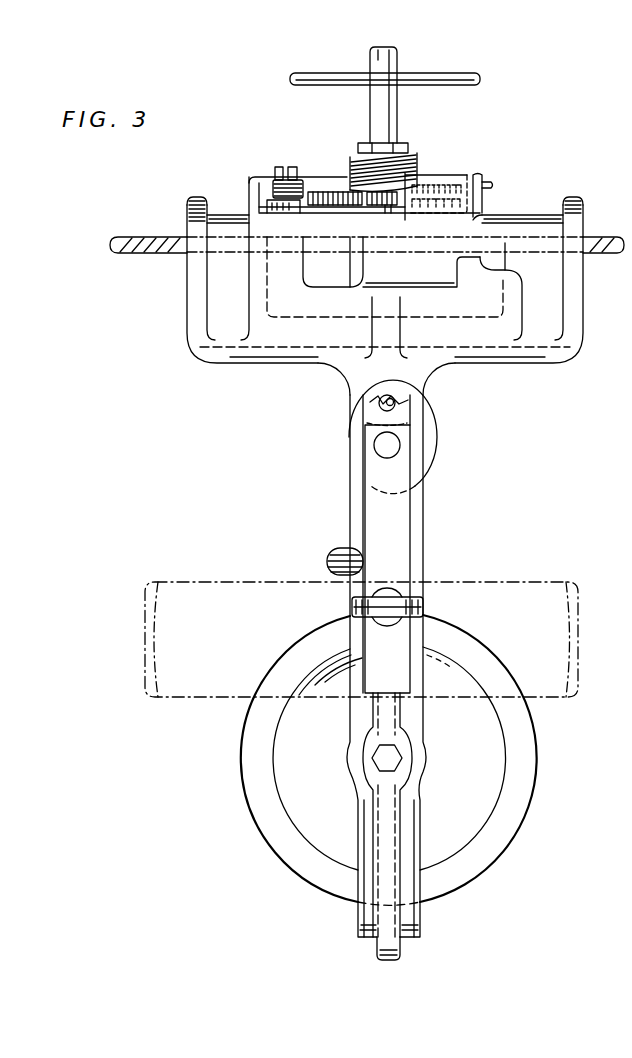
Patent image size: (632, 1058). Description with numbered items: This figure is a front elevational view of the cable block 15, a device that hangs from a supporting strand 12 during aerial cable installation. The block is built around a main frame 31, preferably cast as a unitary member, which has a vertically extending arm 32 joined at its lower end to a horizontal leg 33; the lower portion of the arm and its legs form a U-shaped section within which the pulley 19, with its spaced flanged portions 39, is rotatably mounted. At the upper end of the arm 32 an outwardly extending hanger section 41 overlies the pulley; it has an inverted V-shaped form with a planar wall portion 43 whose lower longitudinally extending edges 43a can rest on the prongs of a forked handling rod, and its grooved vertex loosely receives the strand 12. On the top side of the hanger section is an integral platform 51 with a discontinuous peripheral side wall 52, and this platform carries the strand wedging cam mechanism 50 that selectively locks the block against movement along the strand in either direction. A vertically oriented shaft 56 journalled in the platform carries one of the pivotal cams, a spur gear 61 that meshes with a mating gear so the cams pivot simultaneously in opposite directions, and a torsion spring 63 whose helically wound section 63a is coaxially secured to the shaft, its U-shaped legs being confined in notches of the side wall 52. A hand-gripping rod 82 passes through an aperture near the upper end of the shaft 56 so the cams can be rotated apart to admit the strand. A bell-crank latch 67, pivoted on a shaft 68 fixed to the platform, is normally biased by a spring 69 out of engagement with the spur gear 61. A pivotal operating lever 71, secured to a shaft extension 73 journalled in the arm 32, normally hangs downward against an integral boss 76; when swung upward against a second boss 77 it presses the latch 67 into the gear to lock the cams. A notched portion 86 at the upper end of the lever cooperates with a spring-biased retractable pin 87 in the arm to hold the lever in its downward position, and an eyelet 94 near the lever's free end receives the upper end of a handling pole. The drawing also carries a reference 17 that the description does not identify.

The supporting strand 12 is at (143, 234).
The cable block 15 is at (287, 403).
The roller 17 is at (210, 700).
The pulley 19 is at (530, 815).
The main frame 31 is at (442, 383).
The vertically extending arm 32 is at (415, 727).
The horizontal leg 33 is at (415, 937).
The flanged portions 39 is at (248, 795).
The hanger section 41 is at (538, 216).
The planar wall portion 43 is at (213, 300).
The lower longitudinally extending edges 43a is at (265, 360).
The strand wedging cam mechanism 50 is at (452, 115).
The platform 51 is at (389, 214).
The peripheral side wall 52 is at (250, 193).
The shaft 56 is at (398, 110).
The spur gear 61 is at (330, 195).
The torsion spring 63 is at (480, 180).
The helically wound section 63a is at (352, 170).
The latch 67 is at (306, 218).
The shaft 68 is at (280, 168).
The spring 69 is at (273, 183).
The operating lever 71 is at (408, 533).
The shaft extension 73 is at (400, 445).
The boss 76 is at (332, 552).
The boss 77 is at (343, 265).
The hand-gripping rod 82 is at (413, 75).
The notched portion 86 is at (397, 402).
The retractable pin 87 is at (405, 408).
The eyelet 94 is at (420, 600).